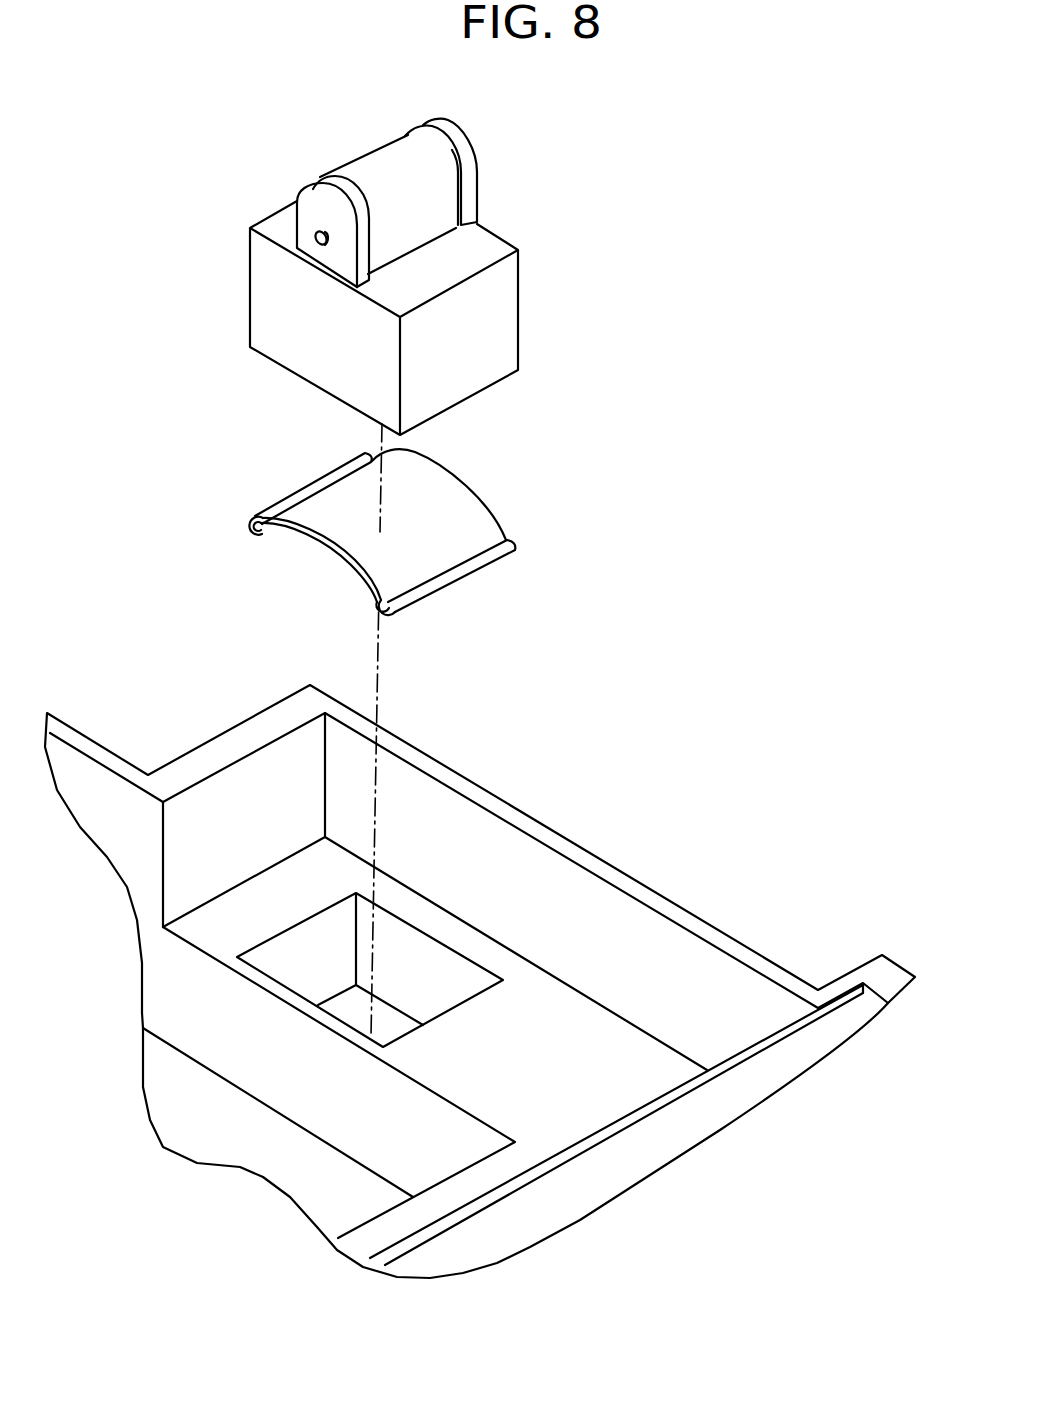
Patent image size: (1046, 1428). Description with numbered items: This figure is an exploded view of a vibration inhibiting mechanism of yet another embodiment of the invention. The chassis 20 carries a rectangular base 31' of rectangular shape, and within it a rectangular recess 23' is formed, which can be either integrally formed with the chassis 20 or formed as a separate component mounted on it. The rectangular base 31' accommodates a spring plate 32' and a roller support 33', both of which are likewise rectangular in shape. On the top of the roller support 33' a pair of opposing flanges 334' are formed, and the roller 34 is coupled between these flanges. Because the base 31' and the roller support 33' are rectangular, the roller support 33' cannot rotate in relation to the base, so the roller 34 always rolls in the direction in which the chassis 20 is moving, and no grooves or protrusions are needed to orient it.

The chassis 20 is at (620, 915).
The rectangular base 31' is at (374, 1082).
The rectangular recess 23' is at (422, 895).
The spring plate 32' is at (423, 532).
The roller support 33' is at (430, 318).
The roller 34 is at (433, 173).
The opposing flanges 334' is at (364, 175).